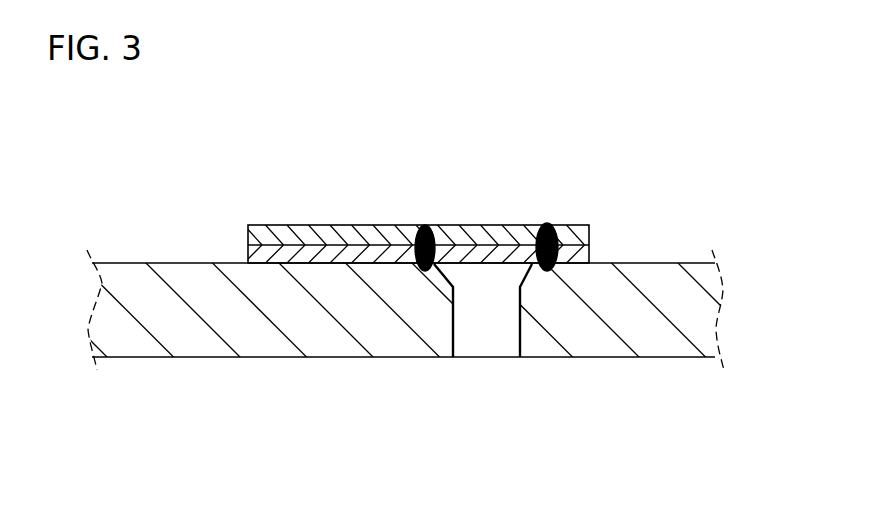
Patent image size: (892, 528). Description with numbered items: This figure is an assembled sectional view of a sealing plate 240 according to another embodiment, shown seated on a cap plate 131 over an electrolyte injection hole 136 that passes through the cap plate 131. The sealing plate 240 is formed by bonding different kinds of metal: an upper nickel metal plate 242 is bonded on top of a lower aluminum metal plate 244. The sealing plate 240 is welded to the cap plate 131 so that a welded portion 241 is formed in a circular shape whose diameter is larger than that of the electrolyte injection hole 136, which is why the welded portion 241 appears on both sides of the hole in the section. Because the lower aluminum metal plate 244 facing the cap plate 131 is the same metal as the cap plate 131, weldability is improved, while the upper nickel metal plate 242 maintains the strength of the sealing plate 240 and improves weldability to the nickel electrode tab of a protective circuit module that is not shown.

The cap plate 131 is at (667, 347).
The electrolyte injection hole 136 is at (455, 333).
The sealing plate 240 is at (514, 207).
The welded portion 241 is at (415, 223).
The upper nickel metal plate 242 is at (590, 233).
The lower aluminum metal plate 244 is at (592, 250).